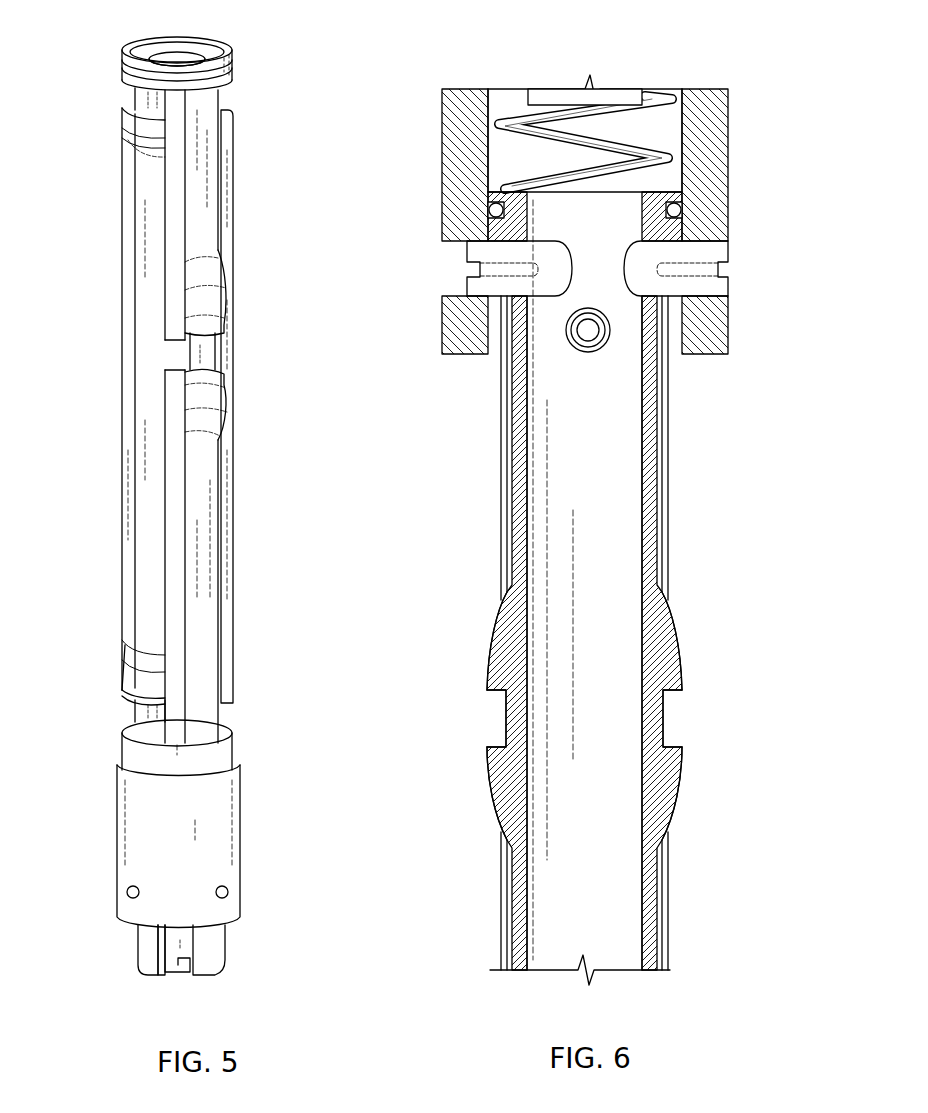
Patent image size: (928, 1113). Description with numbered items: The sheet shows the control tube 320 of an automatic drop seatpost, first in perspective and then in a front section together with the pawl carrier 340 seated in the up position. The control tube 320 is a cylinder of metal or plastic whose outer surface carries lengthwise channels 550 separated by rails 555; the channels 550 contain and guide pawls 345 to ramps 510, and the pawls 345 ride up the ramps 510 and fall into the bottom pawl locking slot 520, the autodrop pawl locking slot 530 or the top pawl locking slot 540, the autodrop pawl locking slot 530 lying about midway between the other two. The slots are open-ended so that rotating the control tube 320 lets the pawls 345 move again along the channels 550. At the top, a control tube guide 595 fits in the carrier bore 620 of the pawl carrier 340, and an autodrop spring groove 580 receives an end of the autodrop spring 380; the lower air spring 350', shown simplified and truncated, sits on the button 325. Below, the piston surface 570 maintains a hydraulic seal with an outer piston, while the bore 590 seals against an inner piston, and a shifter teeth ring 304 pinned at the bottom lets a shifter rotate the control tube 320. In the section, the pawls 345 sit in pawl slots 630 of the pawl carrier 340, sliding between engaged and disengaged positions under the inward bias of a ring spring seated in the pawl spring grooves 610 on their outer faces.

In FIG. 5, the shifter teeth ring 304 is at (148, 953).
In FIG. 5, the control tube 320 is at (283, 70).
In FIG. 6, the control tube 320 is at (515, 416).
In FIG. 6, the button 325 is at (605, 345).
In FIG. 6, the pawl carrier 340 is at (441, 115).
In FIG. 6, the pawls 345 is at (587, 260).
In FIG. 6, the lower air spring 350' is at (561, 71).
In FIG. 6, the autodrop spring 380 is at (610, 150).
In FIG. 5, the ramps 510 is at (140, 158).
In FIG. 6, the ramps 510 is at (493, 645).
In FIG. 5, the bottom pawl locking slot 520 is at (143, 715).
In FIG. 5, the autodrop pawl locking slot 530 is at (200, 355).
In FIG. 6, the autodrop pawl locking slot 530 is at (505, 718).
In FIG. 5, the top pawl locking slot 540 is at (146, 105).
In FIG. 5, the channels 550 is at (198, 208).
In FIG. 6, the channels 550 is at (512, 445).
In FIG. 5, the rails 555 is at (172, 460).
In FIG. 6, the rails 555 is at (500, 370).
In FIG. 5, the piston surface 570 is at (212, 792).
In FIG. 5, the autodrop spring groove 580 is at (128, 62).
In FIG. 6, the autodrop spring groove 580 is at (488, 208).
In FIG. 5, the bore 590 is at (176, 61).
In FIG. 6, the bore 590 is at (590, 848).
In FIG. 5, the control tube guide 595 is at (187, 58).
In FIG. 6, the pawl spring grooves 610 is at (470, 269).
In FIG. 6, the carrier bore 620 is at (500, 160).
In FIG. 6, the pawl slots 630 is at (436, 290).